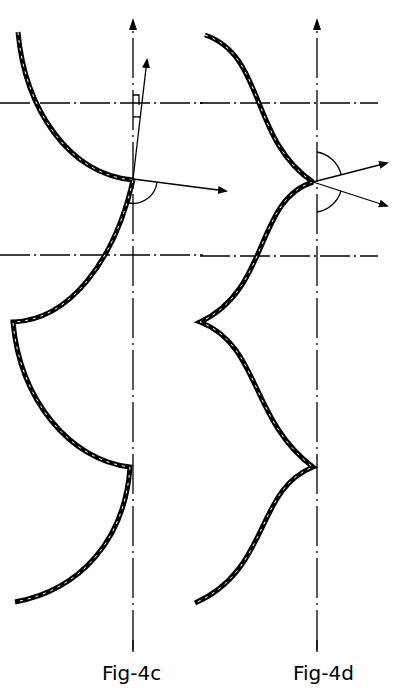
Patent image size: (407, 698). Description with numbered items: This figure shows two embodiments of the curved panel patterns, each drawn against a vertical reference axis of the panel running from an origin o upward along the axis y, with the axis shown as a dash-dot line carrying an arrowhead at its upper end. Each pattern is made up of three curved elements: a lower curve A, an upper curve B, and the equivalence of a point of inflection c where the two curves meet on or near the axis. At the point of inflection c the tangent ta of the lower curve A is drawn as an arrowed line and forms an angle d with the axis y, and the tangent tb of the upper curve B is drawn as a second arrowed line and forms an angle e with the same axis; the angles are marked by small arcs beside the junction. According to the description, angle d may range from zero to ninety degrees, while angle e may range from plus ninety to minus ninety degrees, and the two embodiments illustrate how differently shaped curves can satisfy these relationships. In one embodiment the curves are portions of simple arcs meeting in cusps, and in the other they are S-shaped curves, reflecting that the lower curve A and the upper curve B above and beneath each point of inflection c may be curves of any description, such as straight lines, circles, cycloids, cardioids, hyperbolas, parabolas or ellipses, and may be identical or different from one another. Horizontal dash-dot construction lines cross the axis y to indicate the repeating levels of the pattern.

In FIG. 4C, the lower curve A is at (73, 391).
In FIG. 4D, the lower curve A is at (254, 392).
In FIG. 4C, the upper curve B is at (75, 106).
In FIG. 4D, the upper curve B is at (259, 108).
In FIG. 4C, the point of inflection c is at (139, 172).
In FIG. 4D, the point of inflection c is at (329, 183).
In FIG. 4C, the angle d is at (137, 100).
In FIG. 4D, the angle d is at (330, 161).
In FIG. 4C, the angle e is at (143, 196).
In FIG. 4D, the angle e is at (330, 203).
In FIG. 4C, the tangent of the lower curve ta is at (149, 119).
In FIG. 4D, the tangent of the lower curve ta is at (350, 167).
In FIG. 4C, the tangent of the upper curve tb is at (179, 180).
In FIG. 4D, the tangent of the upper curve tb is at (350, 194).
In FIG. 4C, the axis O-Y y is at (127, 334).
In FIG. 4D, the axis O-Y y is at (311, 334).
In FIG. 4C, the origin of axis O-Y o is at (126, 647).
In FIG. 4D, the origin of axis O-Y o is at (310, 646).